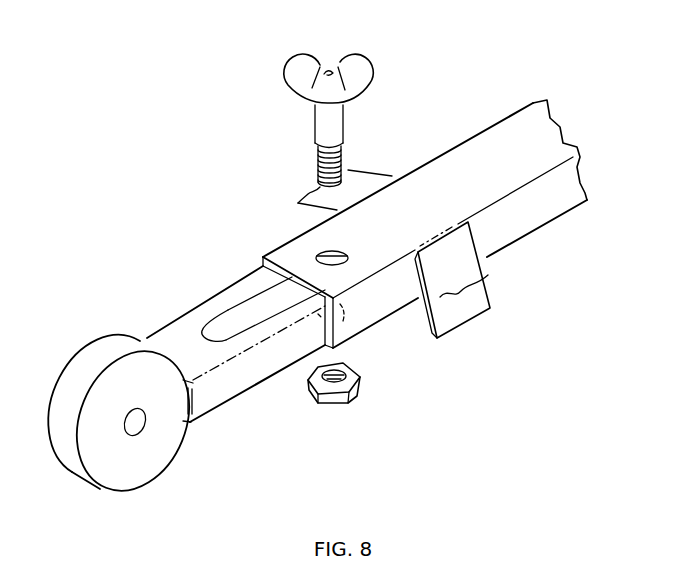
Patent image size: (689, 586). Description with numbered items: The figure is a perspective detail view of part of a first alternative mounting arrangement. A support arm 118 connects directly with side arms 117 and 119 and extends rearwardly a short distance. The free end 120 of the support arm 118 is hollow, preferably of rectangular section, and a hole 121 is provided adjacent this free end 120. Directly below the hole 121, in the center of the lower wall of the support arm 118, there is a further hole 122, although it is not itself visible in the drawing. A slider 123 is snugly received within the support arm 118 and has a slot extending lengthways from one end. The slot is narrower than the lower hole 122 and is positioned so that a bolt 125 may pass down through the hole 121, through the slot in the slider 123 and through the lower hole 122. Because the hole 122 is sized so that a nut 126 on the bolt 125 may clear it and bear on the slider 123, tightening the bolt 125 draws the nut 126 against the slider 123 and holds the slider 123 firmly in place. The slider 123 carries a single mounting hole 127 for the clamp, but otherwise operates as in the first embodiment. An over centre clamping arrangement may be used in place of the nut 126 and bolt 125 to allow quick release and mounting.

The side arm 117 is at (472, 299).
The support arm 118 is at (525, 117).
The side arm 119 is at (370, 167).
The free end 120 is at (271, 254).
The hole 121 is at (328, 253).
The hole 122 is at (348, 320).
The slider 123 is at (187, 308).
The bolt 125 is at (362, 68).
The nut 126 is at (363, 392).
The mounting hole 127 is at (137, 434).